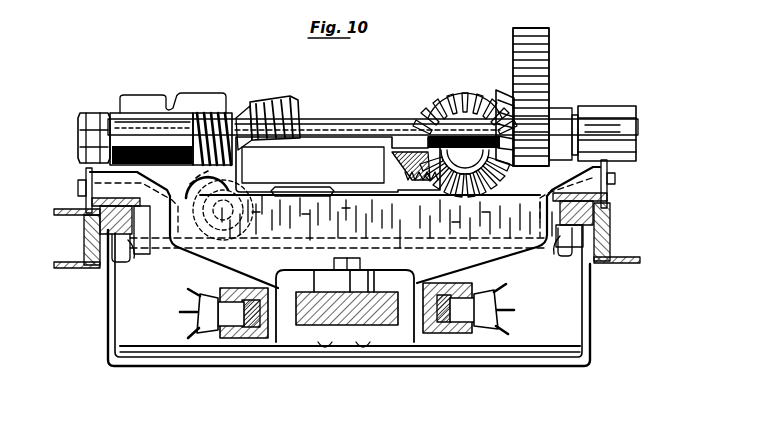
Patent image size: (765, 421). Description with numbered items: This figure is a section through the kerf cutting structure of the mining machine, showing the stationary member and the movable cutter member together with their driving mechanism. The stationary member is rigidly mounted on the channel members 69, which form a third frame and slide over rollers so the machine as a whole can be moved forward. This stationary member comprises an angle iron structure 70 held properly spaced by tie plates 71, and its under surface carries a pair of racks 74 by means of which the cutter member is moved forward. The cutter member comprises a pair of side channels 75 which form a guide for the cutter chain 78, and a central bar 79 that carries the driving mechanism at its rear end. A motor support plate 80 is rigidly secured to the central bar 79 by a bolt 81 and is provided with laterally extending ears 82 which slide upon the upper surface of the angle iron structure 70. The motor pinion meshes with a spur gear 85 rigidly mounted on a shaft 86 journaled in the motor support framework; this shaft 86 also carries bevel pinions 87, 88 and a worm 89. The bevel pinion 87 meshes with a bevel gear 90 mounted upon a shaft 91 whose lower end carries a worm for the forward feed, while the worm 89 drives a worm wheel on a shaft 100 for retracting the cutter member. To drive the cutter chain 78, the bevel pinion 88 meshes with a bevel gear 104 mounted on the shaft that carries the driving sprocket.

The channel members 69 is at (75, 216).
The angle iron structure 70 is at (90, 202).
The tie plates 71 is at (522, 360).
The racks 74 is at (112, 270).
The side channels 75 is at (232, 340).
The cutter chain 78 is at (205, 318).
The central bar 79 is at (324, 308).
The motor support plate 80 is at (247, 240).
The bolt 81 is at (372, 264).
The ears 82 is at (84, 180).
The spur gear 85 is at (545, 56).
The shaft 86 is at (404, 120).
The bevel pinion 87 is at (505, 97).
The bevel pinion 88 is at (266, 100).
The worm 89 is at (208, 112).
The bevel gear 90 is at (463, 94).
The shaft 91 is at (466, 168).
The shaft 100 is at (221, 208).
The bevel gear 104 is at (412, 188).